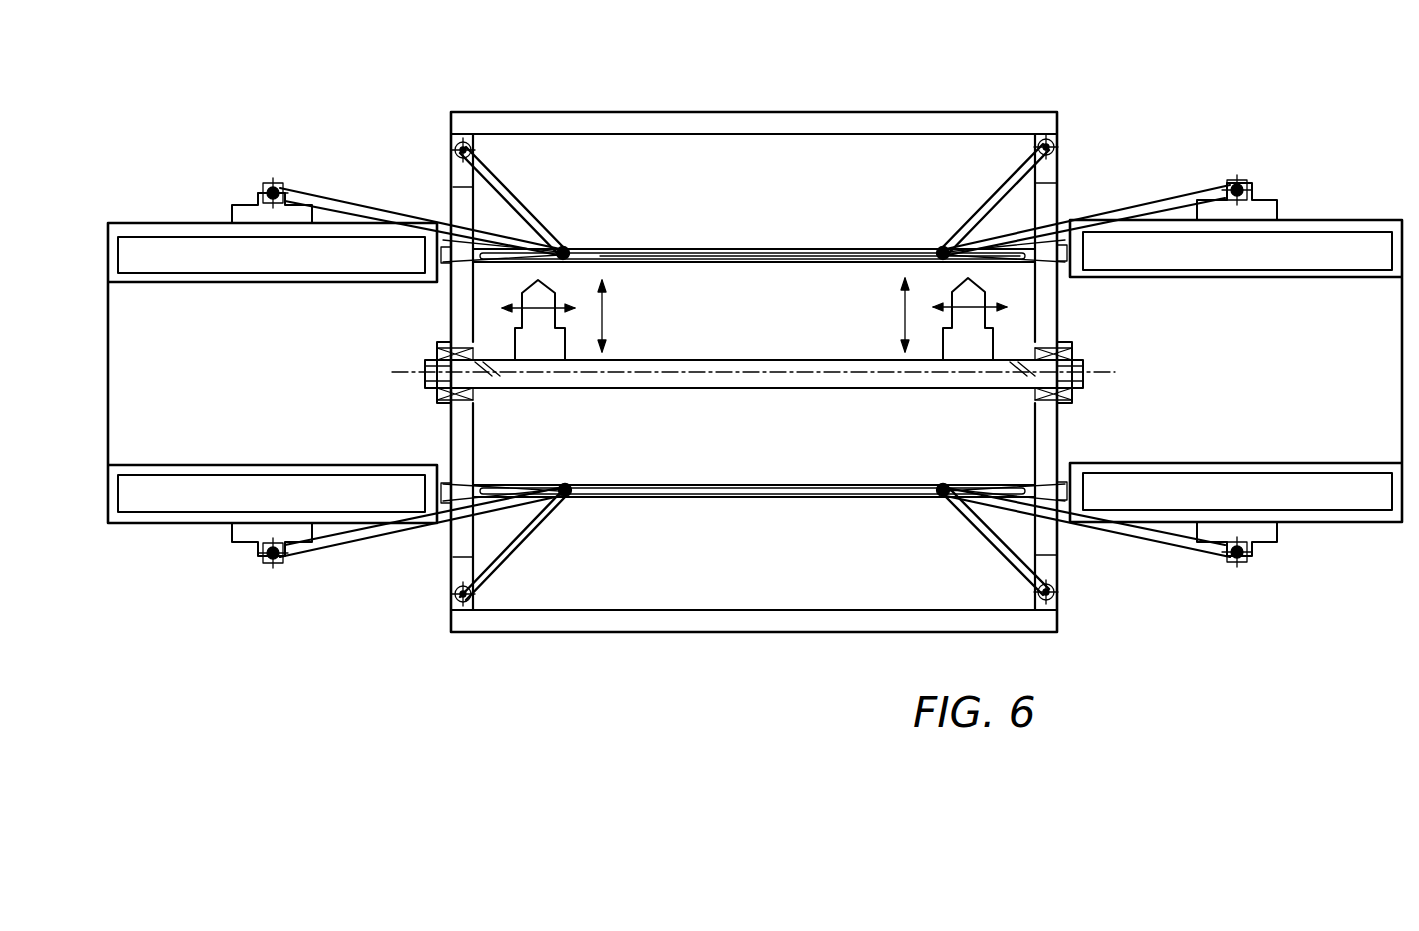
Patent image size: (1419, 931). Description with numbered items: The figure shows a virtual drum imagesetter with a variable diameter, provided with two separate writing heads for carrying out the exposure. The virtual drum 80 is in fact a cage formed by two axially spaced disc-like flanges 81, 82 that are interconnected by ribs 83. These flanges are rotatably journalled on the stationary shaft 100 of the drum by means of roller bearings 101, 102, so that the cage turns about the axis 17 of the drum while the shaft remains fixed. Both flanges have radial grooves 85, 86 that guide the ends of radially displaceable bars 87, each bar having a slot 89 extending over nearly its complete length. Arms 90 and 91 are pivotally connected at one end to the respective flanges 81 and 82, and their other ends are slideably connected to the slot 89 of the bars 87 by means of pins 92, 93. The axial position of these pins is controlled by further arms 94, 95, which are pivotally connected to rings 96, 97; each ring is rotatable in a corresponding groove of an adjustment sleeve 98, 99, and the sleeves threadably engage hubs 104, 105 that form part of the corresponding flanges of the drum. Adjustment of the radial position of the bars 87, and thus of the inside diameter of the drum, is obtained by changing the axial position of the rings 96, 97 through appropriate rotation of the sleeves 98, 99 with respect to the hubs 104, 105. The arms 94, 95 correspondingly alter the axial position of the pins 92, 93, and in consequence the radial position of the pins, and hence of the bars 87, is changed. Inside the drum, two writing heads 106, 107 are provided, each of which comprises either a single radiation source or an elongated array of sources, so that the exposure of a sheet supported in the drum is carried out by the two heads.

The virtual drum 80 is at (794, 75).
The ribs 83 is at (663, 120).
The radial groove 85 is at (447, 200).
The radial groove 86 is at (1050, 200).
The disc-like flange 81 is at (462, 315).
The disc-like flange 82 is at (1048, 318).
The arm 90 is at (505, 187).
The arm 91 is at (1005, 185).
The pin 92 is at (570, 245).
The pin 93 is at (950, 245).
The radially displaceable bar 87 is at (660, 243).
The slot 89 is at (780, 250).
The hub 104 is at (165, 225).
The hub 105 is at (1360, 225).
The adjustment sleeve 98 is at (245, 205).
The adjustment sleeve 99 is at (1270, 205).
The ring 96 is at (273, 180).
The ring 97 is at (1240, 180).
The arm 94 is at (355, 208).
The arm 95 is at (1160, 208).
The axis 17 is at (395, 372).
The stationary shaft 100 is at (780, 355).
The roller bearing 101 is at (435, 398).
The roller bearing 102 is at (1075, 398).
The writing head 106 is at (550, 335).
The writing head 107 is at (965, 318).